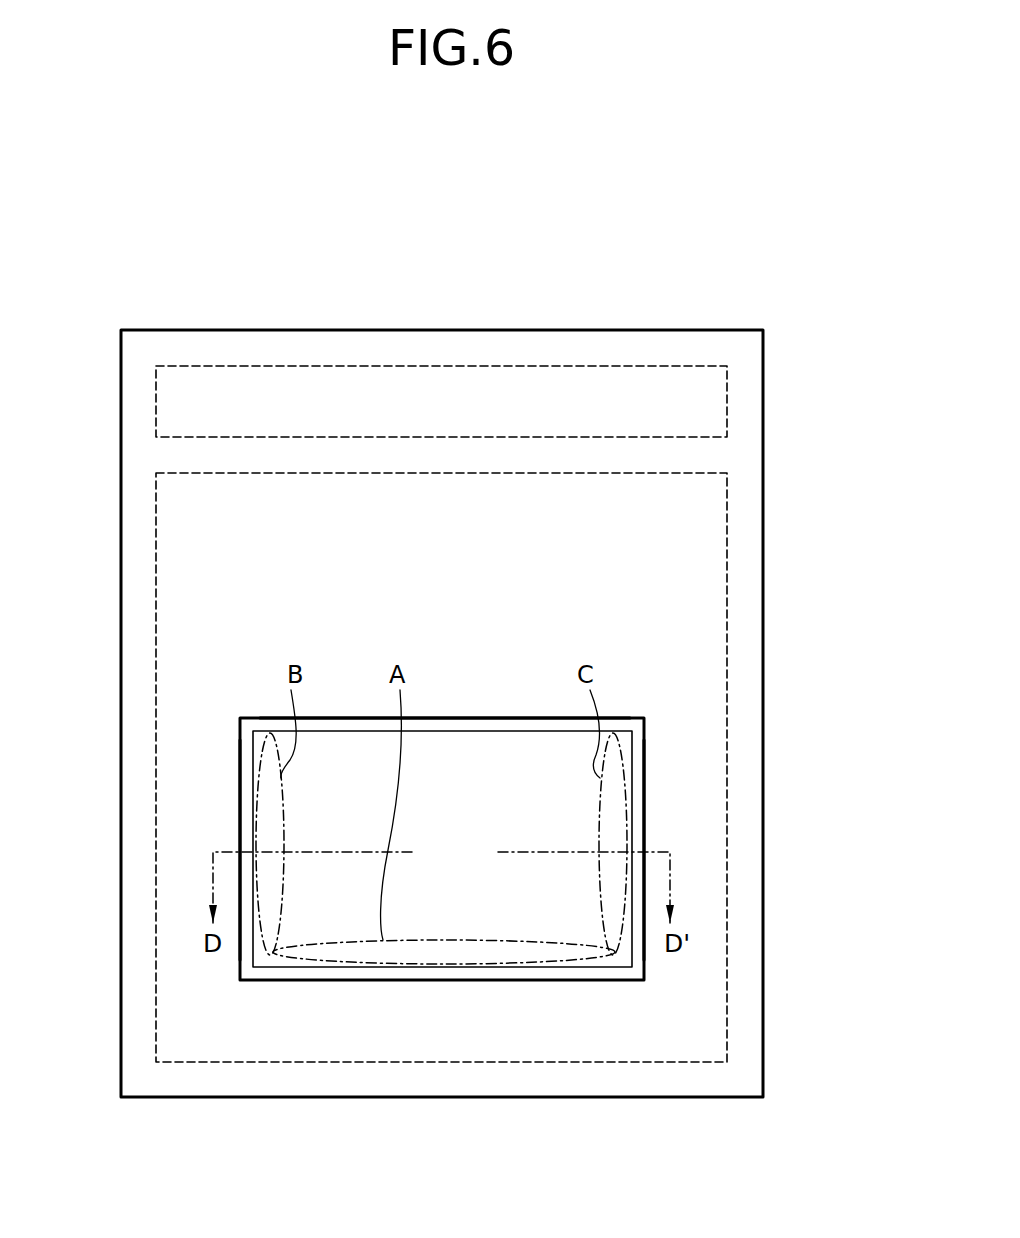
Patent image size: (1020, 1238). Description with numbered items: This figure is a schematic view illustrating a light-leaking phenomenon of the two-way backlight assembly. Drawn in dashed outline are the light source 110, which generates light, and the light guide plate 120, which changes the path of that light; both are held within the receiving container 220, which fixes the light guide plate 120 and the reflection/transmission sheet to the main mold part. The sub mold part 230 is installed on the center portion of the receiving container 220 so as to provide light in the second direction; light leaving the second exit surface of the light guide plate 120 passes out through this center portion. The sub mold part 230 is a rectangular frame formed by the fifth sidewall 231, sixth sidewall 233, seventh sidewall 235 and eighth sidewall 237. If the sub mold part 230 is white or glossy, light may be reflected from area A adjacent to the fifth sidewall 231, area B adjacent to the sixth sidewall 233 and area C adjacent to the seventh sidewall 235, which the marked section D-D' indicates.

The light source 110 is at (727, 382).
The light guide plate 120 is at (727, 492).
The receiving container 220 is at (763, 572).
The sub mold part 230 is at (648, 732).
The fifth sidewall 231 is at (480, 981).
The sixth sidewall 233 is at (646, 790).
The seventh sidewall 235 is at (240, 790).
The eighth sidewall 237 is at (480, 717).